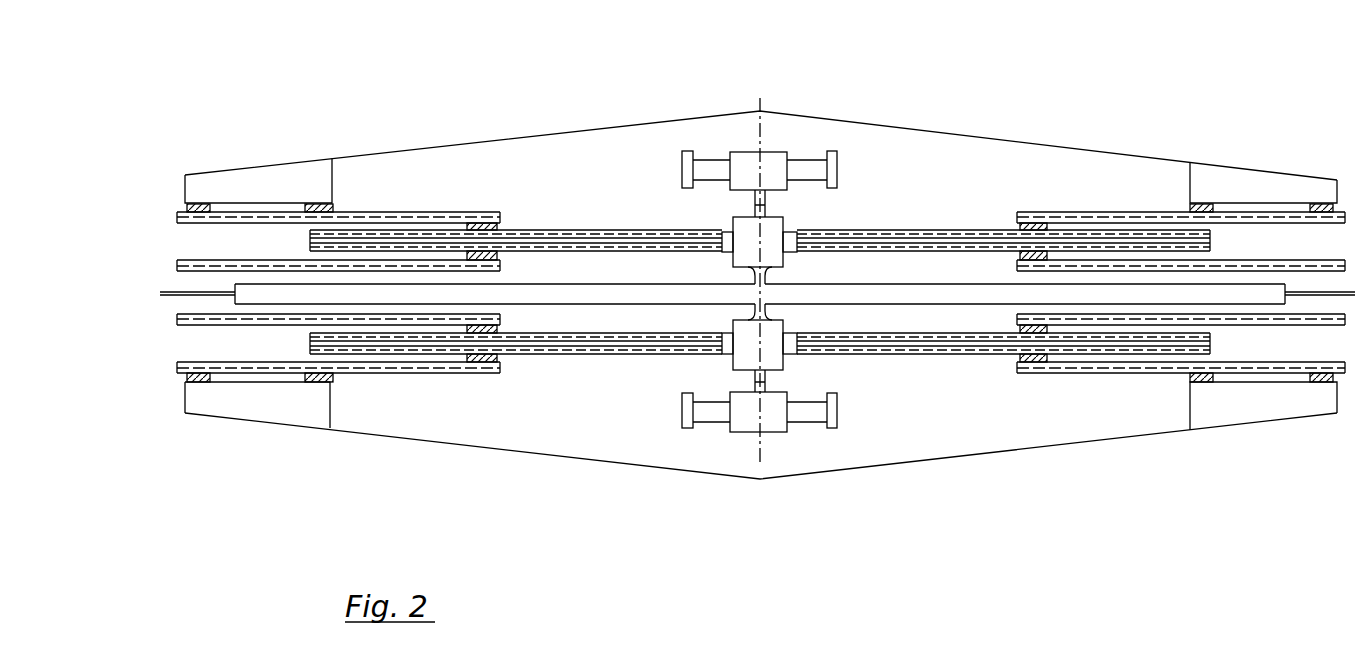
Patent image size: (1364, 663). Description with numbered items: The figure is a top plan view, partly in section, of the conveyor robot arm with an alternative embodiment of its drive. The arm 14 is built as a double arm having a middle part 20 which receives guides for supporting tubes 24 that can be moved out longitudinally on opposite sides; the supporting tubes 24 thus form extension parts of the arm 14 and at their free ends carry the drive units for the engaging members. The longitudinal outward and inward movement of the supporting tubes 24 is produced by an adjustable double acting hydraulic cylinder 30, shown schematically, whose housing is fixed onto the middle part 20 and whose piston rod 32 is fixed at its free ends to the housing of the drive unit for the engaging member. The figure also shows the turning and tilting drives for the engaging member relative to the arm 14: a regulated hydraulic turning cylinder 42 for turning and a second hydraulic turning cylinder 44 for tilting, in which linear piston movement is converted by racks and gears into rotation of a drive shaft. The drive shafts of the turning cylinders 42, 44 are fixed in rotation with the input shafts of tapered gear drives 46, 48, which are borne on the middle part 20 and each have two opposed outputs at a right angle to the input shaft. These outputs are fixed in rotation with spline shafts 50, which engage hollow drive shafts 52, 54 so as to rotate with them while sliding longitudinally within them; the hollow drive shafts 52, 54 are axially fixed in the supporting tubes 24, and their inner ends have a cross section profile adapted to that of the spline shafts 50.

The arm 14 is at (713, 114).
The middle part 20 is at (638, 140).
The supporting tubes 24 is at (400, 215).
The double acting hydraulic cylinder 30 is at (597, 292).
The piston rod 32 is at (195, 292).
The hydraulic turning cylinder 42 is at (770, 160).
The hydraulic turning cylinder 44 is at (745, 422).
The tapered gear drive 46 is at (775, 238).
The tapered gear drive 48 is at (770, 358).
The spline shafts 50 is at (540, 232).
The hollow drive shaft 52 is at (357, 216).
The hollow drive shaft 54 is at (381, 356).